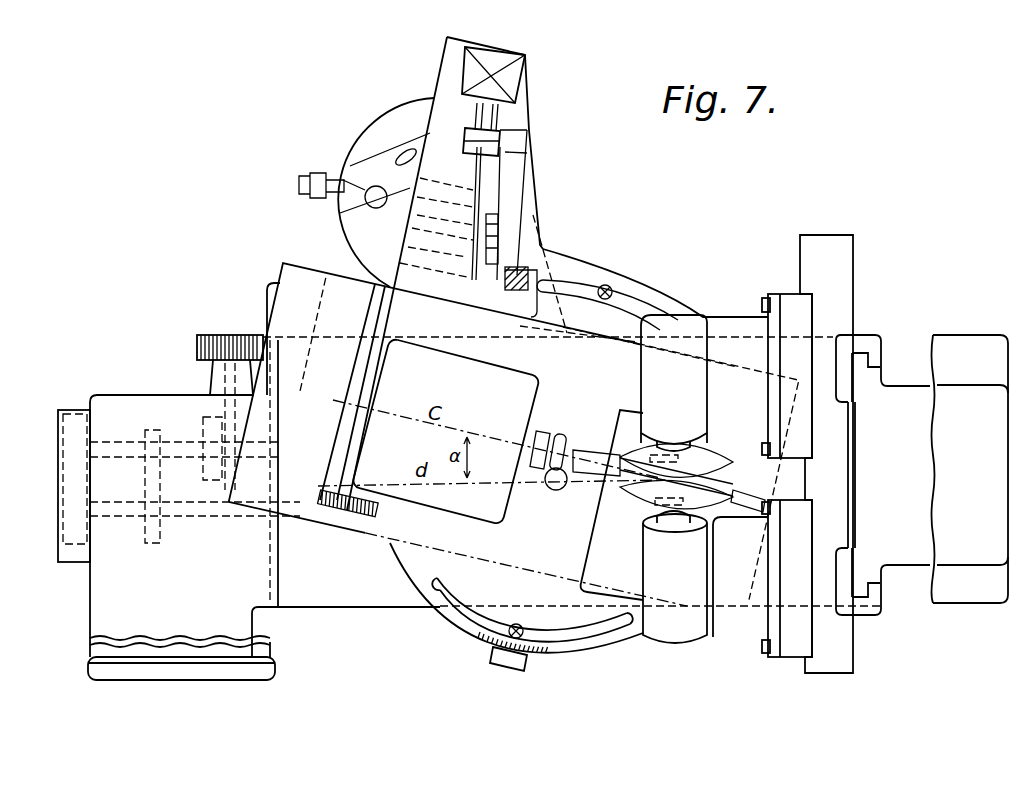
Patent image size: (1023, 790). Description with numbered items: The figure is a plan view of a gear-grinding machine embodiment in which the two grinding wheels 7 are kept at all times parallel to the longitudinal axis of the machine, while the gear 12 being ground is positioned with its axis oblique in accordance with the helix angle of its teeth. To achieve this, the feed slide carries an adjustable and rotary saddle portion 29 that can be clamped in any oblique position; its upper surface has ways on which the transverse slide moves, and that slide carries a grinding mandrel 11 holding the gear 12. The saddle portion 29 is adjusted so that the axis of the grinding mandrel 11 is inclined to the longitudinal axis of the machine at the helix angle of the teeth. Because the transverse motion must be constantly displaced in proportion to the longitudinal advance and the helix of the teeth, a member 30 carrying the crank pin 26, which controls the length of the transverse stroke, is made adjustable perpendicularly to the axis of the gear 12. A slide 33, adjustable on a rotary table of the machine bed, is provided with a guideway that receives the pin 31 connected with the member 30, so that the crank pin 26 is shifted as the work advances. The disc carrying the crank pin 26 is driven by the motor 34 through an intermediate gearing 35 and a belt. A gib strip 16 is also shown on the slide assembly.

The grinding wheels 7 is at (723, 462).
The grinding mandrel 11 is at (590, 458).
The gear 12 is at (610, 482).
The gib strip 16 is at (300, 516).
The crank pin 26 is at (535, 262).
The saddle portion 29 is at (630, 285).
The member 30 is at (413, 242).
The pin 31 is at (345, 208).
The slide 33 is at (395, 137).
The motor 34 is at (507, 58).
The intermediate gearing 35 is at (463, 135).